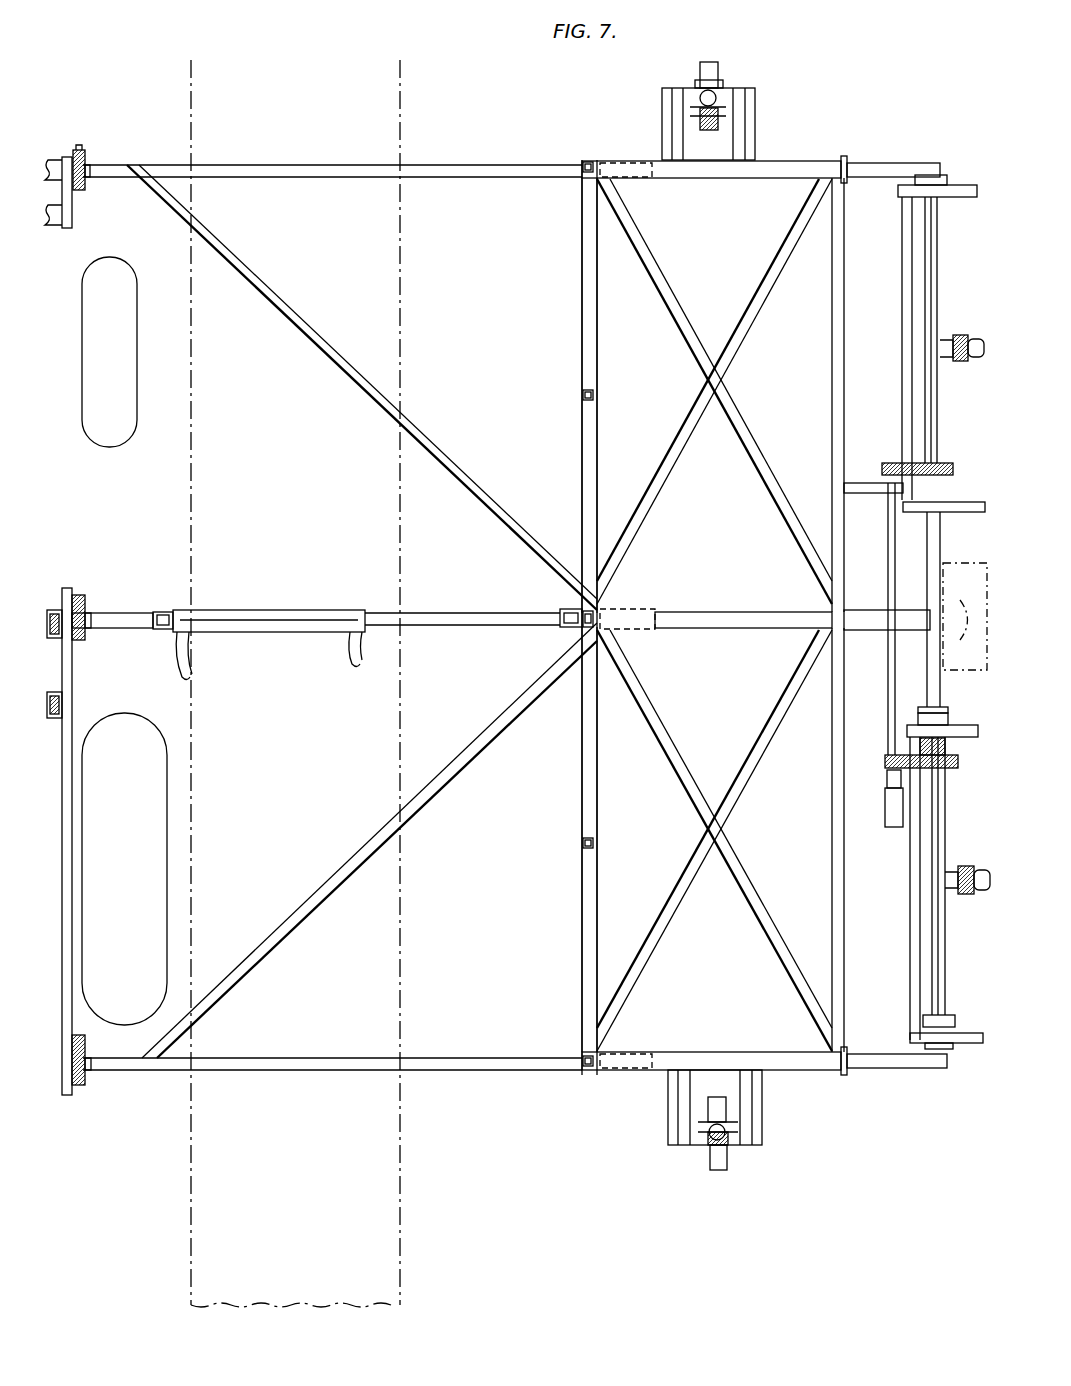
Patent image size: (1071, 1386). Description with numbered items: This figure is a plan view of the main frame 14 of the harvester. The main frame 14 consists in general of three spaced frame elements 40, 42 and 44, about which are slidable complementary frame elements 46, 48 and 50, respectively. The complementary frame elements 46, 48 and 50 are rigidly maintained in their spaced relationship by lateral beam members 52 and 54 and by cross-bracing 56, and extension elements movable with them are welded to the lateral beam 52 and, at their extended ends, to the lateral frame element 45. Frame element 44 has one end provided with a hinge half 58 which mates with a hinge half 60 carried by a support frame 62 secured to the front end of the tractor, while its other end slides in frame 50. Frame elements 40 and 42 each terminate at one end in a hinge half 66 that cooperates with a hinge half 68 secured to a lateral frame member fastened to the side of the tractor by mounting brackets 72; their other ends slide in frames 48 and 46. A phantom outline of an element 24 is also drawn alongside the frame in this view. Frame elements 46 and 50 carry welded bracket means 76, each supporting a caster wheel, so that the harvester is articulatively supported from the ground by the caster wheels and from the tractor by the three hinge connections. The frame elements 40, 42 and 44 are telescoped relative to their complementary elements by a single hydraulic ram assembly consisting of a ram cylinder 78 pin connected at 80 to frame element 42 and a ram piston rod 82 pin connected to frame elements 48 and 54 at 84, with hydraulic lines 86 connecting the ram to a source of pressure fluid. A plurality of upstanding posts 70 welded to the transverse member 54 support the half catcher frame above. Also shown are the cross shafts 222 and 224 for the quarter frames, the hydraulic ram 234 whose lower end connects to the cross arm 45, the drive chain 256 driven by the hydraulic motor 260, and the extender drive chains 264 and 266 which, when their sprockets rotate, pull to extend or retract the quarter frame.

The main frame 14 is at (593, 1082).
The tank 24 is at (400, 1268).
The frame element 40 is at (180, 1070).
The frame element 42 is at (140, 613).
The frame element 44 is at (295, 180).
The lateral frame element 45 is at (946, 990).
The complementary frame element 46 is at (725, 1052).
The complementary frame element 48 is at (700, 613).
The complementary frame element 50 is at (793, 160).
The lateral beam member 52 is at (832, 387).
The lateral beam member 54 is at (580, 303).
The cross-bracing 56 is at (704, 440).
The hinge half 58 is at (85, 174).
The hinge half 60 is at (83, 162).
The support frame 62 is at (60, 228).
The hinge half 66 is at (88, 627).
The hinge half 68 is at (85, 602).
The upstanding post 70 is at (578, 173).
The mounting bracket 72 is at (62, 709).
The caster wheel carrying bracket means 76 is at (755, 125).
The ram cylinder 78 is at (278, 610).
The pin connection 80 is at (168, 615).
The ram piston rod 82 is at (393, 613).
The pin connection 84 is at (565, 628).
The hydraulic line 86 is at (350, 650).
The cross shaft 222 is at (943, 950).
The cross shaft 224 is at (935, 404).
The hydraulic ram 234 is at (974, 872).
The drive chain 256 is at (952, 768).
The hydraulic motor 260 is at (895, 828).
The extender drive chain 264 is at (955, 1050).
The extender drive chain 266 is at (915, 728).